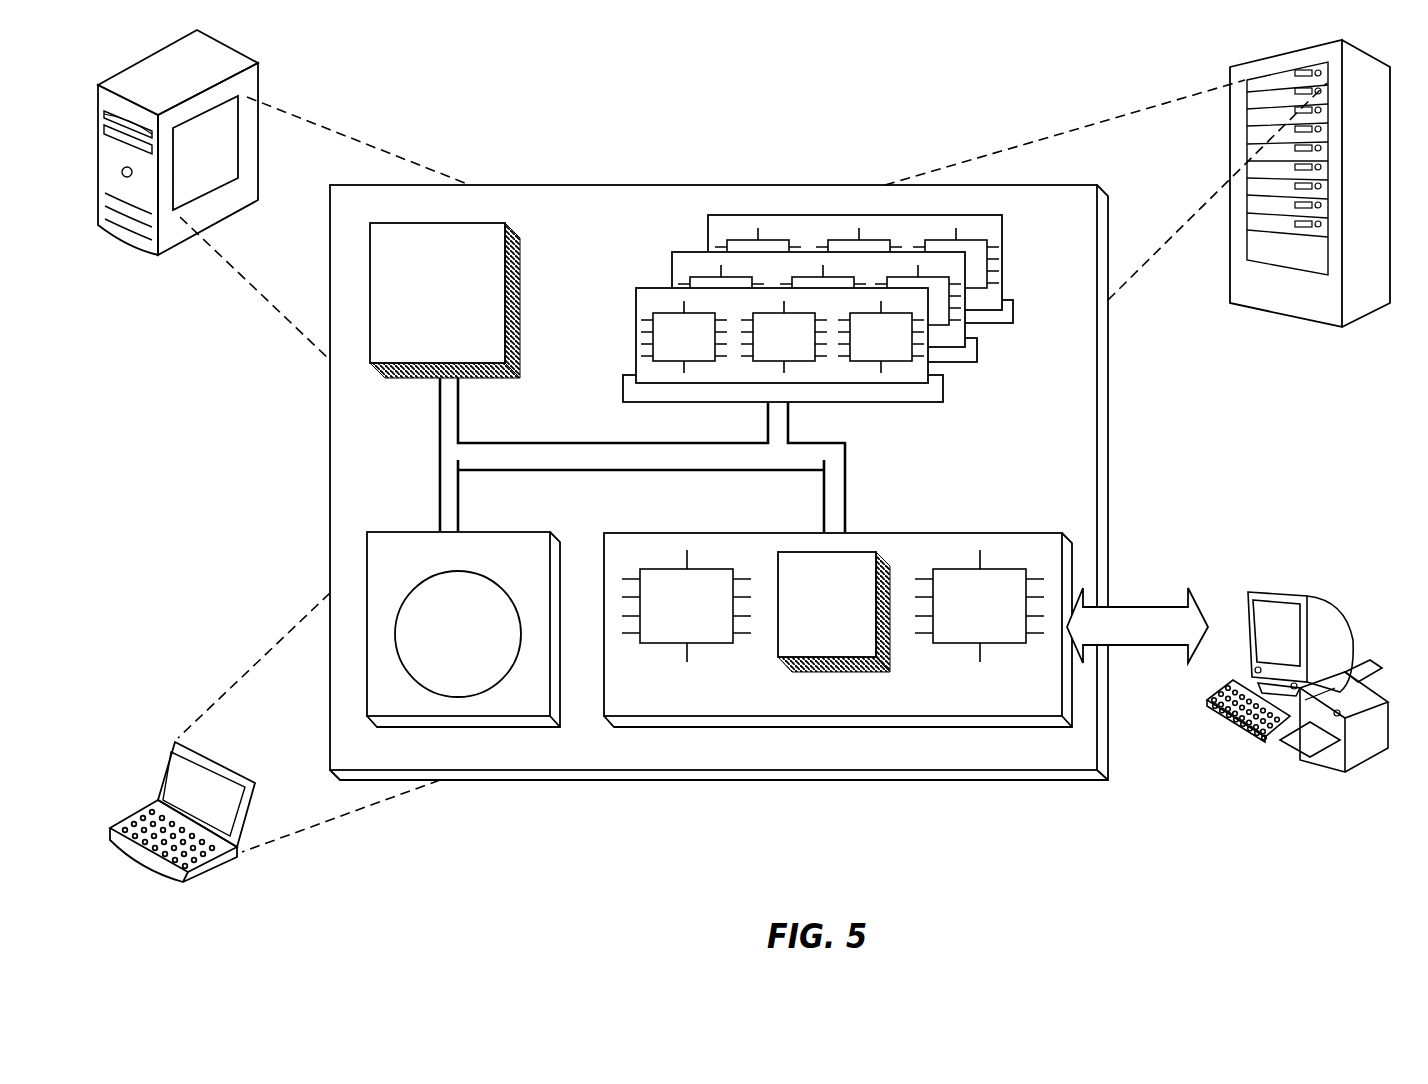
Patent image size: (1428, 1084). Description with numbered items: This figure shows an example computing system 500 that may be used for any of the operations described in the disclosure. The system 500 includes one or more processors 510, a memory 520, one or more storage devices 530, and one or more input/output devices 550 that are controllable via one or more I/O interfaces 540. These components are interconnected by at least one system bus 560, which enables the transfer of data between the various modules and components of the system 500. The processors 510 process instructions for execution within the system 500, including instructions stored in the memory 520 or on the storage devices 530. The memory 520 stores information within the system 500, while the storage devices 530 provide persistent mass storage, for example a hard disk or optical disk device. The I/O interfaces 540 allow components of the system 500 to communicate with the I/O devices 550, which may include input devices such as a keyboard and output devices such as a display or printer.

The computing system 500 is at (535, 103).
The processor 510 is at (496, 356).
The memory 520 is at (1011, 364).
The storage device 530 is at (541, 707).
The I/O interface 540 is at (951, 707).
The I/O device 550 is at (1242, 598).
The system bus 560 is at (637, 460).